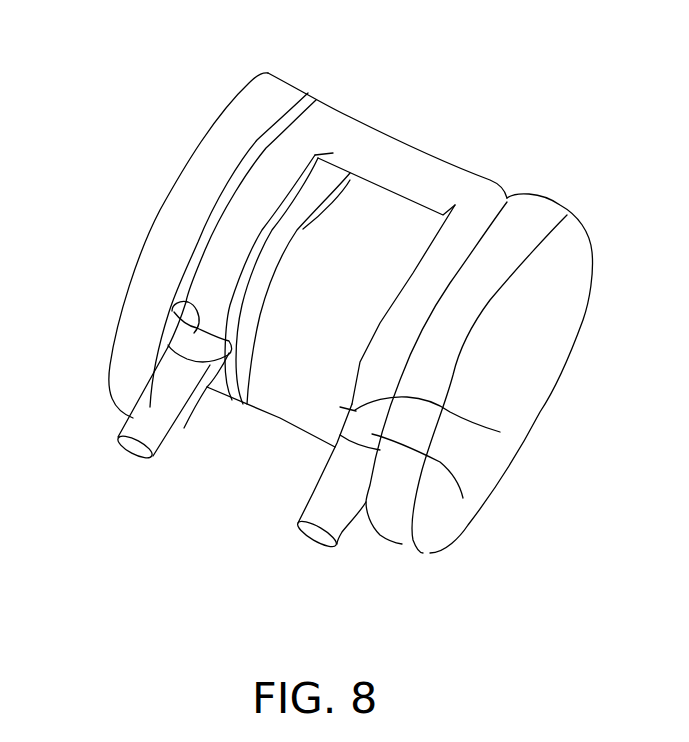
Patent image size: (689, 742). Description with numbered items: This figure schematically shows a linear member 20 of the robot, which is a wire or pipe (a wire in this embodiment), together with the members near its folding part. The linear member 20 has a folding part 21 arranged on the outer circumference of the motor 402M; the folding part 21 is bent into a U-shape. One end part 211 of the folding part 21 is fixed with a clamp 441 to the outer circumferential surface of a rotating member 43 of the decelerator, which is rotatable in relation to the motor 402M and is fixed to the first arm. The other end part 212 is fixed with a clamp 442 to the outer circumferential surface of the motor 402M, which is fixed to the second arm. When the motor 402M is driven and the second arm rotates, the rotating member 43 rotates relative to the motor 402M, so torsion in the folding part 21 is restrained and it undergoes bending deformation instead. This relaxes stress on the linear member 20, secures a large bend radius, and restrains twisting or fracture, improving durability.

The linear member 20 is at (387, 130).
The folding part 21 is at (407, 162).
The rotating member 43 is at (315, 155).
The one end part 211 is at (178, 312).
The other end part 212 is at (500, 432).
The clamp 441 is at (182, 335).
The clamp 442 is at (463, 498).
The motor 402M is at (285, 428).